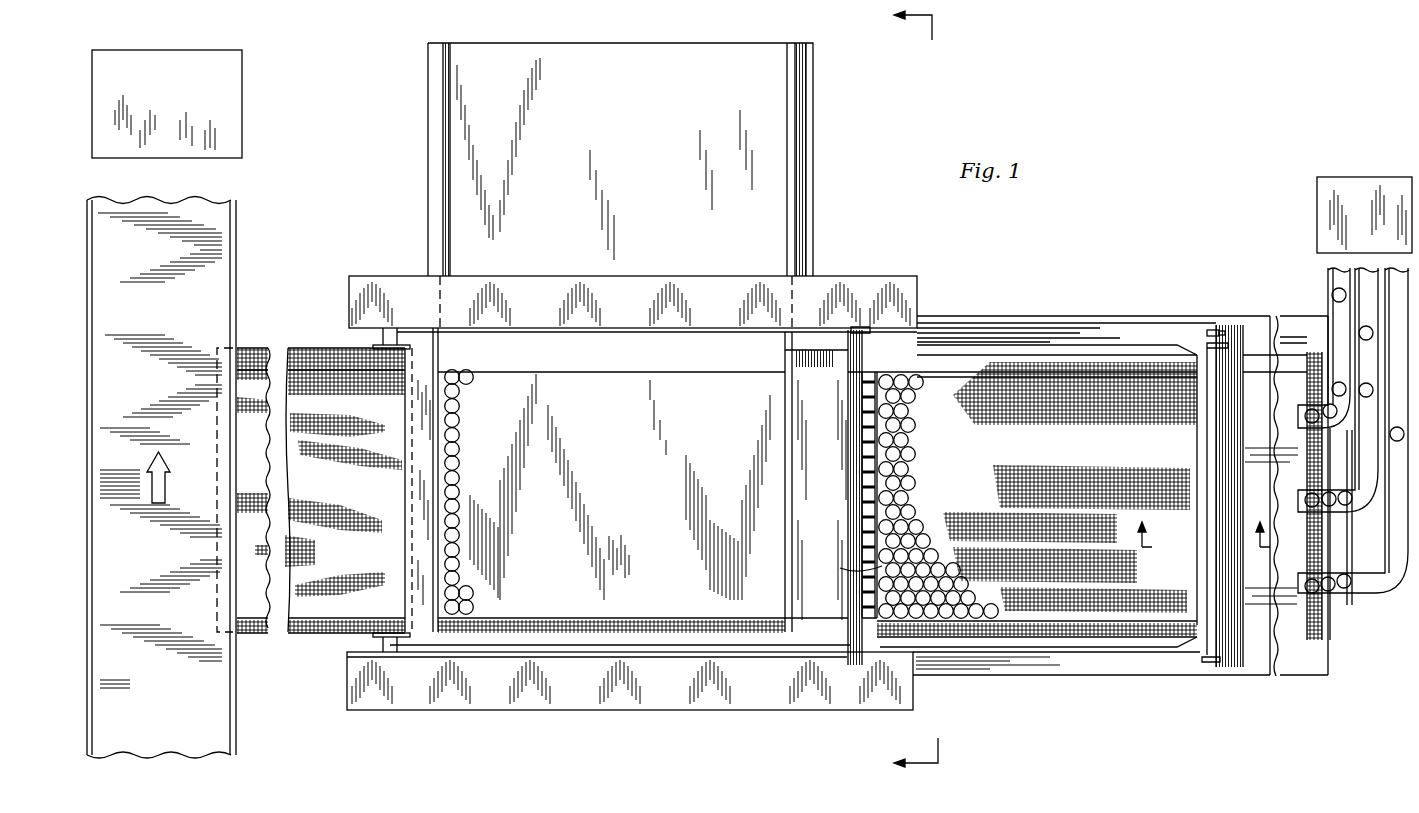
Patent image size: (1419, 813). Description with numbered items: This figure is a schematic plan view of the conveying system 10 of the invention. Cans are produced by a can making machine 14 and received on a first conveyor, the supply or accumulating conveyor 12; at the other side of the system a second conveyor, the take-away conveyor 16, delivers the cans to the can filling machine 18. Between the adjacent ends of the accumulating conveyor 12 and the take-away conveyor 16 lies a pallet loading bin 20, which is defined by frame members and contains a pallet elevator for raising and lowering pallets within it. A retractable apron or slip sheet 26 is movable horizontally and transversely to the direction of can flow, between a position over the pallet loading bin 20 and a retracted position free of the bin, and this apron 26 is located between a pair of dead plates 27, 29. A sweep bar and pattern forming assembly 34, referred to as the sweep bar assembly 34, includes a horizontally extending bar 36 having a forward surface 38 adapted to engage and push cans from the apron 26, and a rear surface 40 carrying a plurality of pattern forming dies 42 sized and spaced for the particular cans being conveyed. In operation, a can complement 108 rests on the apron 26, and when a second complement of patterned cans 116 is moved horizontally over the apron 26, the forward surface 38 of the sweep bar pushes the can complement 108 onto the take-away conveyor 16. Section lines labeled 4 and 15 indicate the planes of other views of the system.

The section line 4- 4 is at (913, 389).
The conveying system 10 is at (1166, 300).
The supply or accumulating conveyor 12 is at (1155, 449).
The can making machine 14 is at (1352, 217).
The section line 15- 15 is at (1206, 547).
The take-away conveyor 16 is at (258, 380).
The can filling machine 18 is at (182, 74).
The pallet loading bin 20 is at (782, 433).
The retractable apron or slip sheet 26 is at (642, 52).
The dead plate 27 is at (415, 557).
The dead plate 29 is at (830, 534).
The sweep bar and pattern forming assembly 34 is at (857, 412).
The horizontally extending bar 36 is at (868, 486).
The forward surface 38 is at (895, 488).
The rear surface 40 is at (868, 466).
The pattern forming dies 42 is at (878, 540).
The can complement 108 is at (463, 467).
The second complement of patterned cans 116 is at (908, 442).